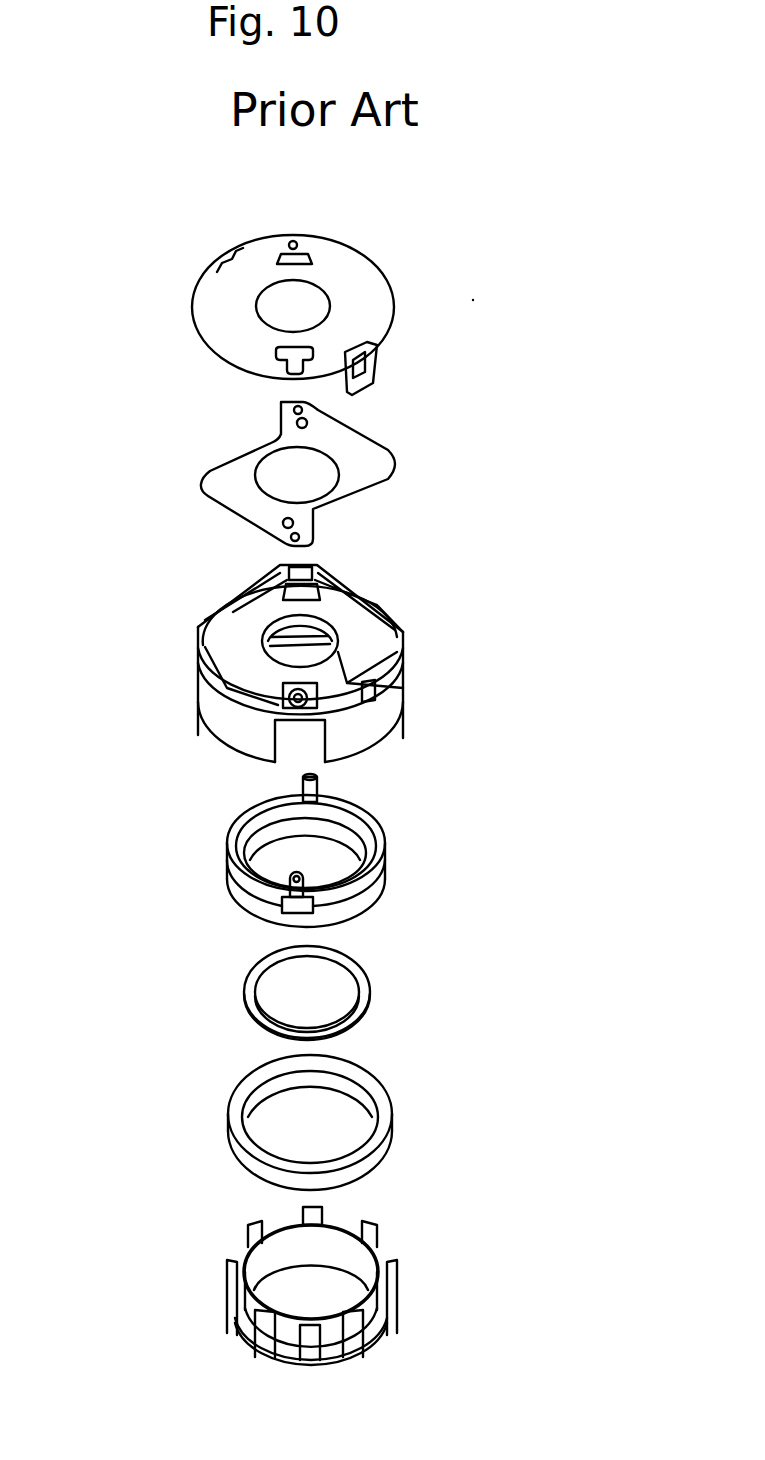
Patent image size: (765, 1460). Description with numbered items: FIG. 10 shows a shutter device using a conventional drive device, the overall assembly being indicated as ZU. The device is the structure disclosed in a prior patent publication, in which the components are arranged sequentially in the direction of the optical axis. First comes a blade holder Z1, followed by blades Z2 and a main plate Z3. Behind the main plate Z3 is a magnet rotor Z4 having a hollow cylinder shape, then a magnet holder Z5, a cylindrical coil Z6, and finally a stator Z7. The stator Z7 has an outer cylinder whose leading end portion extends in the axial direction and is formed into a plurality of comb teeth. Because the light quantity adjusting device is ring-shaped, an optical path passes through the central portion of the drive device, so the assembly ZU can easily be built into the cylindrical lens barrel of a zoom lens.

The prior art unit assembly ZU is at (473, 300).
The blade holder Z1 is at (183, 304).
The blades Z2 is at (182, 480).
The main plate Z3 is at (185, 650).
The magnet rotor Z4 is at (210, 860).
The magnet holder Z5 is at (225, 993).
The cylindrical coil Z6 is at (215, 1120).
The stator Z7 is at (215, 1285).